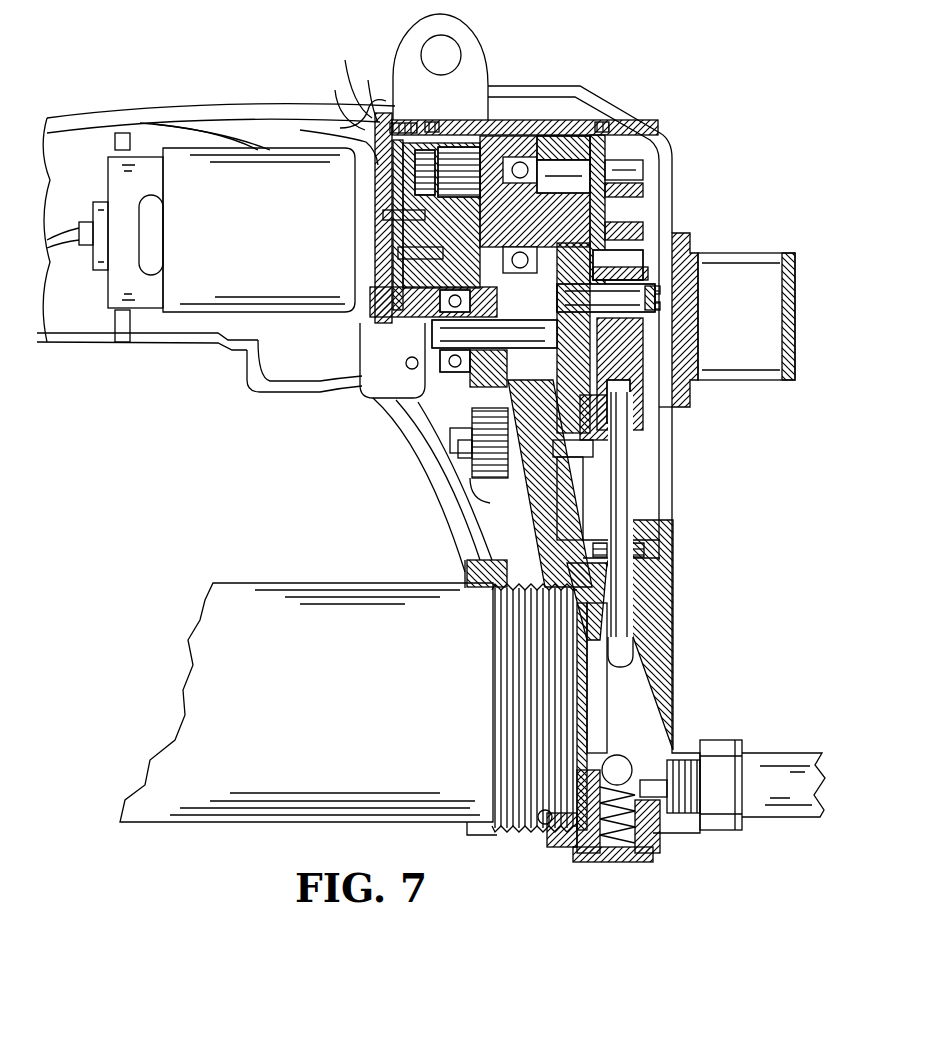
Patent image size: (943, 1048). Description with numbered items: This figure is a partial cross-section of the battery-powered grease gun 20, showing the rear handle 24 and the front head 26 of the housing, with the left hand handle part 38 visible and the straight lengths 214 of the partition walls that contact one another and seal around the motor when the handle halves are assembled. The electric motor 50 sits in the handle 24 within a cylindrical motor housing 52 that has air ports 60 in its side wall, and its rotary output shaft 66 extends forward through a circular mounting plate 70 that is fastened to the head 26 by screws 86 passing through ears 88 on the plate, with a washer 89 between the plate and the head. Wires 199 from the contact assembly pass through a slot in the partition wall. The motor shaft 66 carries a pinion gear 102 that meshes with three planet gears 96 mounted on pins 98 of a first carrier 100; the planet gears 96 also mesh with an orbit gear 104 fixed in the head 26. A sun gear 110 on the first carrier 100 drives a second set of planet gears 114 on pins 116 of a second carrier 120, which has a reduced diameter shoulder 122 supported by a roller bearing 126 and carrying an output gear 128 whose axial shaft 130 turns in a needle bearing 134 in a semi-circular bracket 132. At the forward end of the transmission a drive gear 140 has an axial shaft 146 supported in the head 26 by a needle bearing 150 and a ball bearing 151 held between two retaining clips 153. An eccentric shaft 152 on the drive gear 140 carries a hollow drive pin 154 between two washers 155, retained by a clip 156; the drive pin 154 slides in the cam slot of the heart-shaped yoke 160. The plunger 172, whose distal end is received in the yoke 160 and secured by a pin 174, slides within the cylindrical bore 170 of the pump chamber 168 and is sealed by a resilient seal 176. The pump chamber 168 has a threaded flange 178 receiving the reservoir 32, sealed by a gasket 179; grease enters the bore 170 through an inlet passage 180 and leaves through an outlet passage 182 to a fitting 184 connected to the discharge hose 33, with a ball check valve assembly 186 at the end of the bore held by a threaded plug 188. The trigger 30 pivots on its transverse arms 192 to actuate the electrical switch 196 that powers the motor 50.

The grease gun 20 is at (265, 82).
The handle 24 is at (207, 104).
The head 26 is at (682, 604).
The trigger 30 is at (295, 372).
The reservoir 32 is at (332, 618).
The discharge hose 33 is at (800, 765).
The left hand handle part 38 is at (140, 350).
The electric motor 50 is at (268, 322).
The motor housing 52 is at (203, 282).
The air ports 60 is at (162, 237).
The motor shaft 66 is at (378, 233).
The mounting plate 70 is at (365, 135).
The screws 86 is at (335, 90).
The ears 88 is at (368, 80).
The washer 89 is at (345, 60).
The planet gears 96 is at (423, 135).
The pins 98 is at (383, 257).
The first carrier 100 is at (445, 132).
The pinion gear 102 is at (380, 207).
The orbit gear 104 is at (382, 284).
The sun gear 110 is at (482, 213).
The planet gears 114 is at (449, 150).
The pins 116 is at (441, 196).
The second carrier 120 is at (499, 150).
The shoulder 122 is at (541, 168).
The roller bearing 126 is at (516, 160).
The output gear 128 is at (560, 201).
The axial shaft 130 is at (643, 215).
The bracket 132 is at (640, 170).
The needle bearing 134 is at (643, 192).
The drive gear 140 is at (583, 442).
The axial shaft 146 is at (660, 344).
The needle bearing 150 is at (518, 372).
The ball bearing 151 is at (464, 326).
The eccentric shaft 152 is at (618, 296).
The retaining clips 153 is at (432, 378).
The drive pin 154 is at (663, 335).
The washers 155 is at (640, 272).
The retaining clip 156 is at (662, 320).
The yoke 160 is at (655, 385).
The pump chamber 168 is at (667, 692).
The bore 170 is at (627, 721).
The plunger 172 is at (620, 527).
The pin 174 is at (623, 420).
The resilient seal 176 is at (645, 556).
The threaded flange 178 is at (555, 840).
The gasket 179 is at (567, 633).
The inlet passage 180 is at (607, 660).
The outlet passage 182 is at (670, 833).
The fitting 184 is at (727, 823).
The ball check valve assembly 186 is at (606, 761).
The threaded plug 188 is at (610, 862).
The trigger arms 192 is at (404, 364).
The electrical switch 196 is at (497, 432).
The wires 199 is at (208, 132).
The straight lengths 214 is at (113, 142).